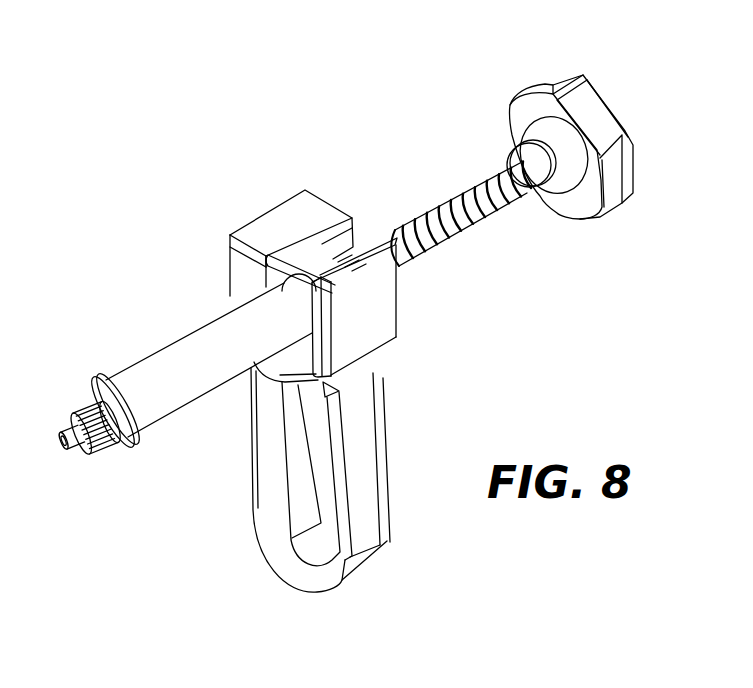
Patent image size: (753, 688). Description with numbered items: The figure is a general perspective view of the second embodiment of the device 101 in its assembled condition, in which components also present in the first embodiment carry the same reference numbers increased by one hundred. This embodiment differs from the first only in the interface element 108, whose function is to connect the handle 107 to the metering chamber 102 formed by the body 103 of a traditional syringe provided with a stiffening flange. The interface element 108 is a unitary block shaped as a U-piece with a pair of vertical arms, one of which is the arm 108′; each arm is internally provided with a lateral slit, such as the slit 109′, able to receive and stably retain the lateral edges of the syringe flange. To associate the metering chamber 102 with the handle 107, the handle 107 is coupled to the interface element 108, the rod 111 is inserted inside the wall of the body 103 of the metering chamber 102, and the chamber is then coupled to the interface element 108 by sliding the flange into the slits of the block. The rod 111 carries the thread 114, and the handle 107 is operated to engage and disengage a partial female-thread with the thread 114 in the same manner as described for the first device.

The device 101 is at (397, 123).
The metering chamber 102 is at (140, 347).
The body 103 is at (157, 410).
The handle 107 is at (237, 517).
The interface element 108 is at (268, 186).
The vertical arm 108′ is at (230, 269).
The lateral slit 109′ is at (280, 247).
The rod 111 is at (478, 160).
The thread 114 is at (441, 199).